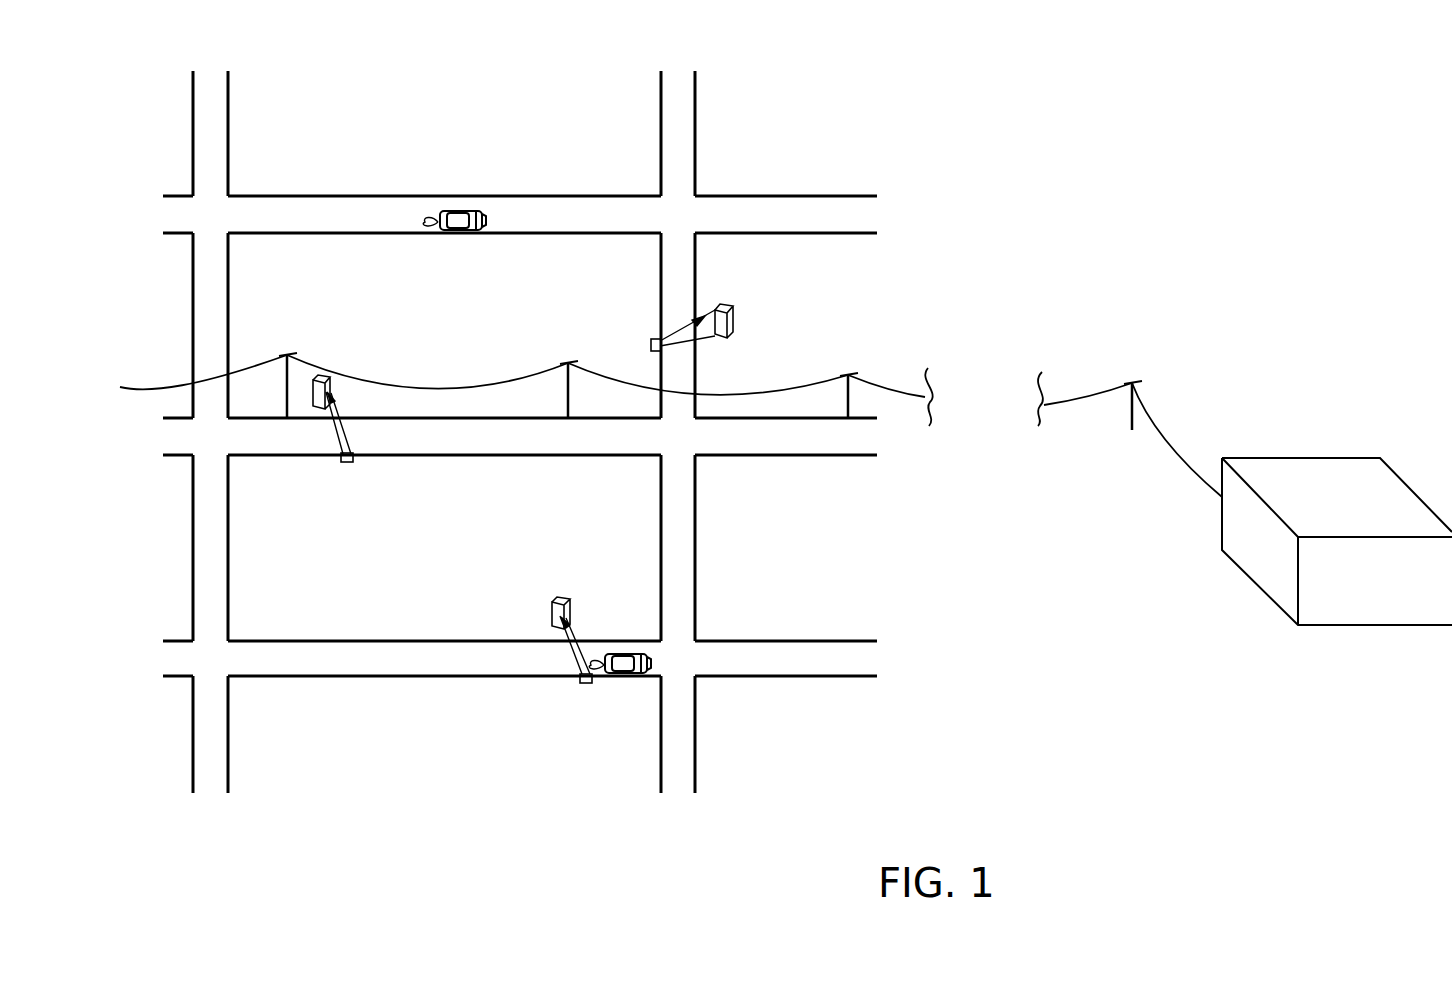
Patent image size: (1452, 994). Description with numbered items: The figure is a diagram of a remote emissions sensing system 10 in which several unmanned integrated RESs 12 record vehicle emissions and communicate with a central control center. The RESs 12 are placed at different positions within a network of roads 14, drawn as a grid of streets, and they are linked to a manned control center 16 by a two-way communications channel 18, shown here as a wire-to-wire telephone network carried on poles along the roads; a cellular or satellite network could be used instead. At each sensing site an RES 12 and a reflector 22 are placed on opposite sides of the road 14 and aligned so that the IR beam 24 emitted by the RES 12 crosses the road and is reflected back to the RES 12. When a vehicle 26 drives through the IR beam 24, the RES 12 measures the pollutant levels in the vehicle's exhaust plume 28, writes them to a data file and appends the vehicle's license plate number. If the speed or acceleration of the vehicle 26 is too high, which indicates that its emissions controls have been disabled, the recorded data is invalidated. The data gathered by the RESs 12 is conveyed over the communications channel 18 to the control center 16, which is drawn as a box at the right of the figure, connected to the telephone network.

The remote emissions sensing system 10 is at (1112, 240).
The unmanned integrated RES 12 is at (326, 378).
The network of roads 14 is at (755, 212).
The control center 16 is at (1257, 543).
The two-way communications channel 18 is at (893, 392).
The reflector 22 is at (352, 462).
The IR beam 24 is at (338, 432).
The vehicle 26 is at (462, 212).
The exhaust plume 28 is at (428, 222).